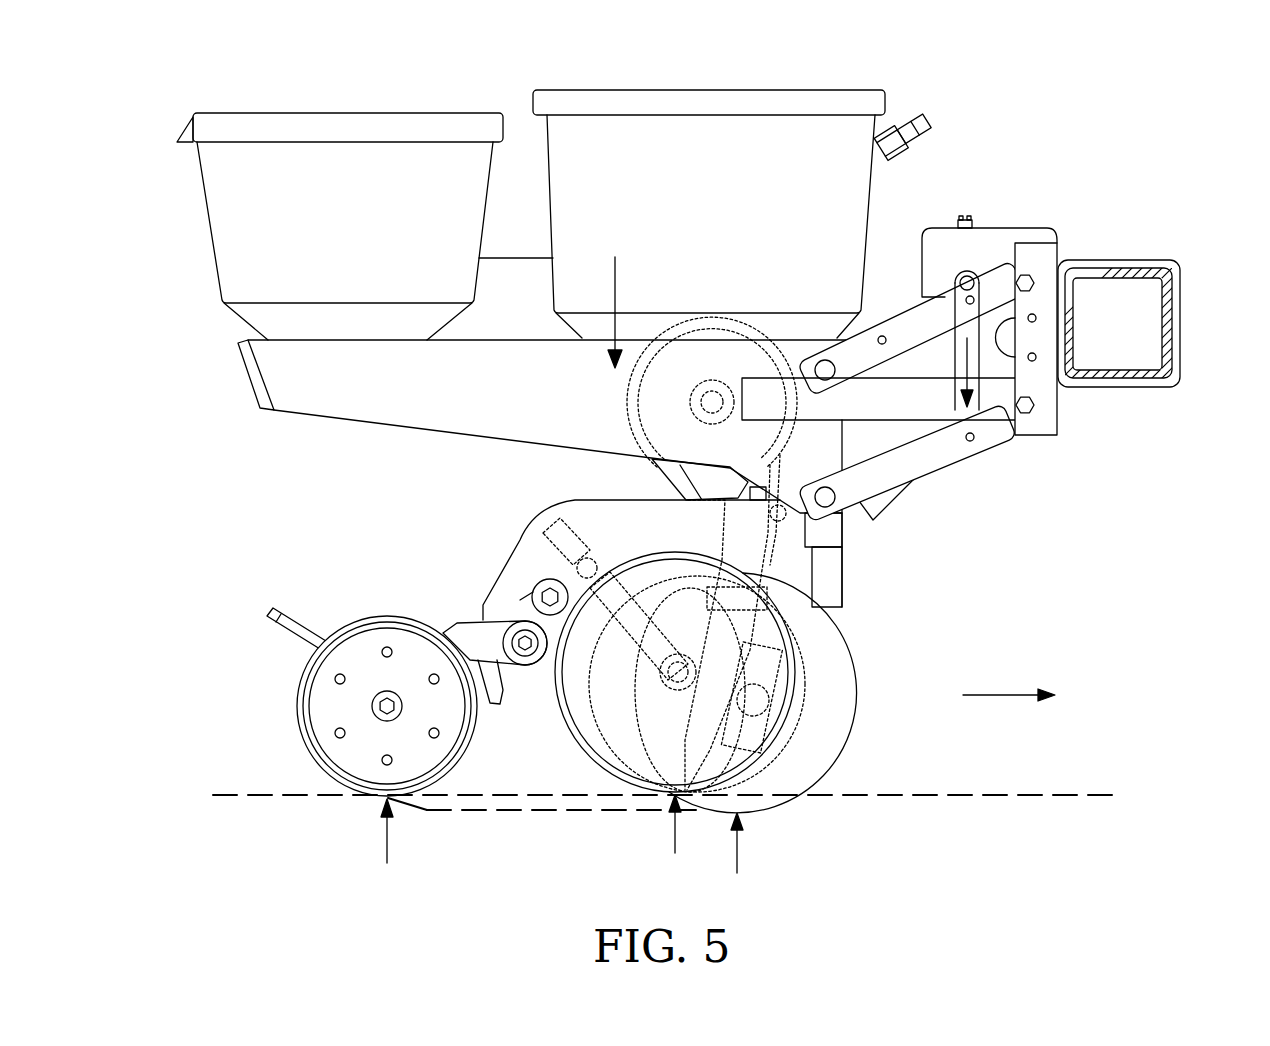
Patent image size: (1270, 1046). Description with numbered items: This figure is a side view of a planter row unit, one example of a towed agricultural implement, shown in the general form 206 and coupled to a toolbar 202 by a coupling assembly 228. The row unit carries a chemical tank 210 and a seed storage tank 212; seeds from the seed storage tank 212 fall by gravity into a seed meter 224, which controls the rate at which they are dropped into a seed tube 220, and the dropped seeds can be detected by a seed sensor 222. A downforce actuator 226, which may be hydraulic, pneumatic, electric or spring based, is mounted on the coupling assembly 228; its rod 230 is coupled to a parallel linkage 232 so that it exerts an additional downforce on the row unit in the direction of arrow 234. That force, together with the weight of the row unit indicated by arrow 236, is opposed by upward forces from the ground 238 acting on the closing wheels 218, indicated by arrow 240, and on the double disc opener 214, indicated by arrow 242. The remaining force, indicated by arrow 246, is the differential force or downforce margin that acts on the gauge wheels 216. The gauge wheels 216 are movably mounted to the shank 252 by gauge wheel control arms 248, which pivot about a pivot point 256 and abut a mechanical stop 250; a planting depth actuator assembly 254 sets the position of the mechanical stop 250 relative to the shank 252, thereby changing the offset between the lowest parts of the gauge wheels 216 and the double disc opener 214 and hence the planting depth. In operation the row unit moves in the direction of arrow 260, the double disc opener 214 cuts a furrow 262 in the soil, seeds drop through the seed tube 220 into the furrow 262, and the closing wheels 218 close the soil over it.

The toolbar 202 is at (1143, 265).
The row unit 206 is at (1170, 97).
The chemical tank 210 is at (352, 232).
The seed storage tank 212 is at (723, 177).
The double disc opener 214 is at (823, 760).
The gauge wheels 216 is at (617, 783).
The closing wheels 218 is at (332, 785).
The seed tube 220 is at (787, 660).
The seed sensor 222 is at (800, 632).
The seed meter 224 is at (787, 357).
The downforce actuator 226 is at (970, 258).
The coupling assembly 228 is at (1060, 397).
The rod 230 is at (1070, 380).
The parallel linkage 232 is at (942, 440).
The arrow indicating actuator downforce 234 is at (1023, 413).
The arrow indicating gravity force 236 is at (615, 298).
The ground 238 is at (248, 793).
The arrow indicating closing wheel ground force 240 is at (387, 848).
The arrow indicating disc opener ground force 242 is at (737, 852).
The arrow indicating differential force 246 is at (676, 833).
The gauge wheel control arms 248 is at (567, 722).
The mechanical stop 250 is at (610, 607).
The shank 252 is at (638, 512).
The planting depth actuator assembly 254 is at (565, 553).
The pivot point 256 is at (527, 587).
The arrow indicating direction of travel 260 is at (1000, 695).
The furrow 262 is at (497, 803).